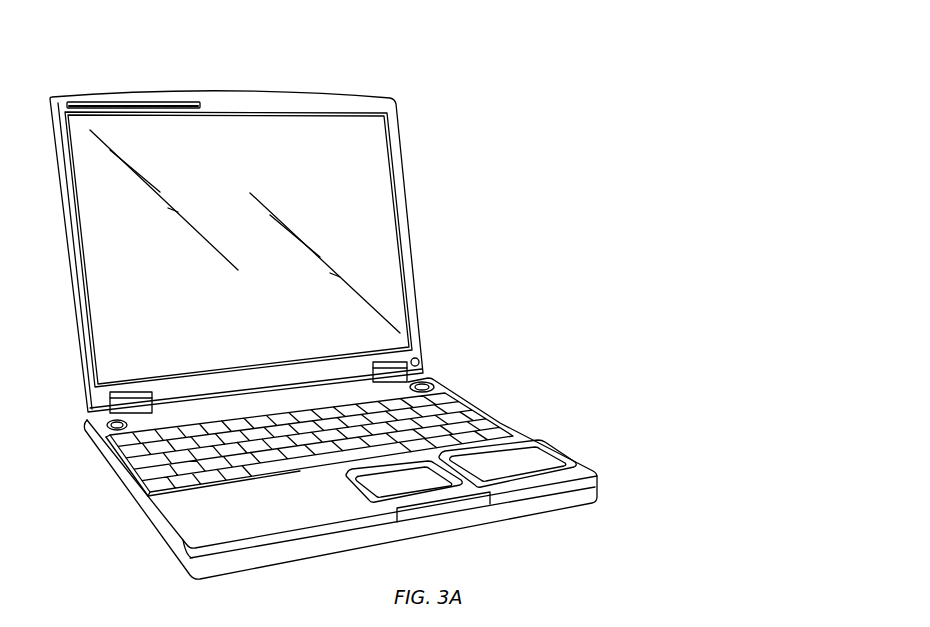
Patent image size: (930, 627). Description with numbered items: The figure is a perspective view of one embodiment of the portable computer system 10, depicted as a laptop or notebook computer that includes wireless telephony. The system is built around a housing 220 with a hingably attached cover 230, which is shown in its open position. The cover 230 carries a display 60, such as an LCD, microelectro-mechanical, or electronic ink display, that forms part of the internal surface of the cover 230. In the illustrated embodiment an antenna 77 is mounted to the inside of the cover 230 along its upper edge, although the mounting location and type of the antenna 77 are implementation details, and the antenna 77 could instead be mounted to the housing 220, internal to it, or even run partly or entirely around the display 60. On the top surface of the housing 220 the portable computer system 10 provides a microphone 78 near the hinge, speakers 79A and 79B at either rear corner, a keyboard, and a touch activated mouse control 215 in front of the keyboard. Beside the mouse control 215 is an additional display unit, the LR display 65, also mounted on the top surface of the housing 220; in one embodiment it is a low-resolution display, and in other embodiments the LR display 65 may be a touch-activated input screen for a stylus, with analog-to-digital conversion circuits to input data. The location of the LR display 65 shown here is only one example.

The portable computer system 10 is at (436, 116).
The display 60 is at (380, 226).
The LR display 65 is at (536, 458).
The antenna 77 is at (155, 103).
The microphone 78 is at (419, 360).
The speaker 79A is at (433, 382).
The speaker 79B is at (100, 424).
The touch activated mouse control 215 is at (379, 486).
The housing 220 is at (550, 502).
The cover 230 is at (245, 103).